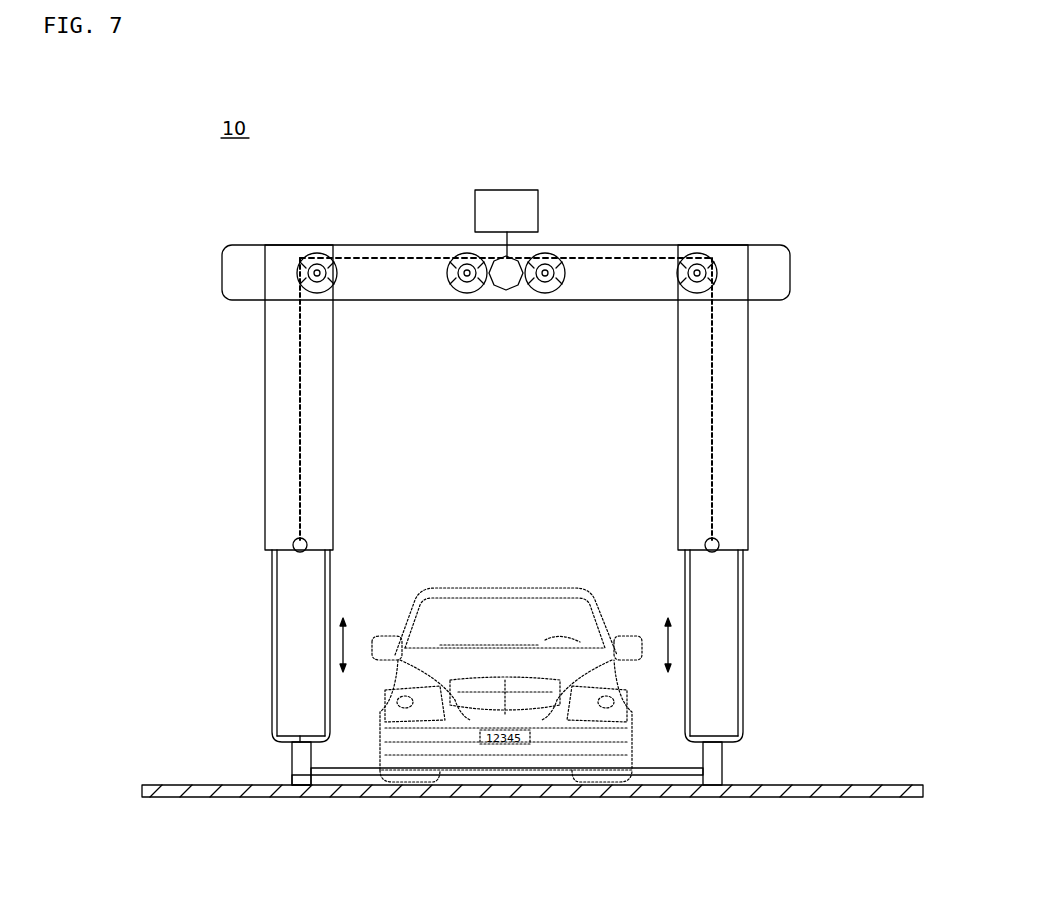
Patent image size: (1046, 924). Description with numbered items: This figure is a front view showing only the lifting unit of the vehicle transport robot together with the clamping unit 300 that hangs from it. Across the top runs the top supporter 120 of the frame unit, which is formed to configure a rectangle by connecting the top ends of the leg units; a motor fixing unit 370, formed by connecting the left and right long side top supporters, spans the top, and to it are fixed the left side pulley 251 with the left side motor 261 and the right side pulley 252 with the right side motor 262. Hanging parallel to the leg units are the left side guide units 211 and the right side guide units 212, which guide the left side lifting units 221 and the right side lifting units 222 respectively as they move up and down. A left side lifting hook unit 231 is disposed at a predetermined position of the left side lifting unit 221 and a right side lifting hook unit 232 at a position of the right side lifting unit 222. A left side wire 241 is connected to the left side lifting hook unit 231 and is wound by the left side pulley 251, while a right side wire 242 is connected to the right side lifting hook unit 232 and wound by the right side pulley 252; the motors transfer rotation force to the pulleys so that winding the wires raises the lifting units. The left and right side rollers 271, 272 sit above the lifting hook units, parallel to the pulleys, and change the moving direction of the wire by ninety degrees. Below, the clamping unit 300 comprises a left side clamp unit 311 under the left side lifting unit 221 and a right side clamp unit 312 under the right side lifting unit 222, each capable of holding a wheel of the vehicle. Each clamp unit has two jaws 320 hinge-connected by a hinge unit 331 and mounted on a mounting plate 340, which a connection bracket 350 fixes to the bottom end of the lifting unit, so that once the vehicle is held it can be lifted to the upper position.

The top supporter 120 is at (778, 270).
The left side guide unit 211 is at (273, 443).
The right side guide unit 212 is at (736, 443).
The left side lifting unit 221 is at (286, 645).
The right side lifting unit 222 is at (727, 645).
The left side lifting hook unit 231 is at (292, 540).
The right side lifting hook unit 232 is at (718, 540).
The left side wire 241 is at (357, 254).
The right side wire 242 is at (663, 254).
The left side pulley 251 is at (462, 254).
The right side pulley 252 is at (550, 254).
The left side motor 261 is at (503, 186).
The right side motor 262 is at (507, 190).
The left side roller 271 is at (305, 258).
The right side roller 272 is at (714, 254).
The clamping unit 300 is at (507, 741).
The left side clamp unit 311 is at (258, 742).
The right side clamp unit 312 is at (756, 758).
The jaw 320 is at (352, 786).
The hinge unit 331 is at (293, 778).
The mounting plate 340 is at (292, 752).
The connection bracket 350 is at (298, 742).
The motor fixing unit 370 is at (505, 300).